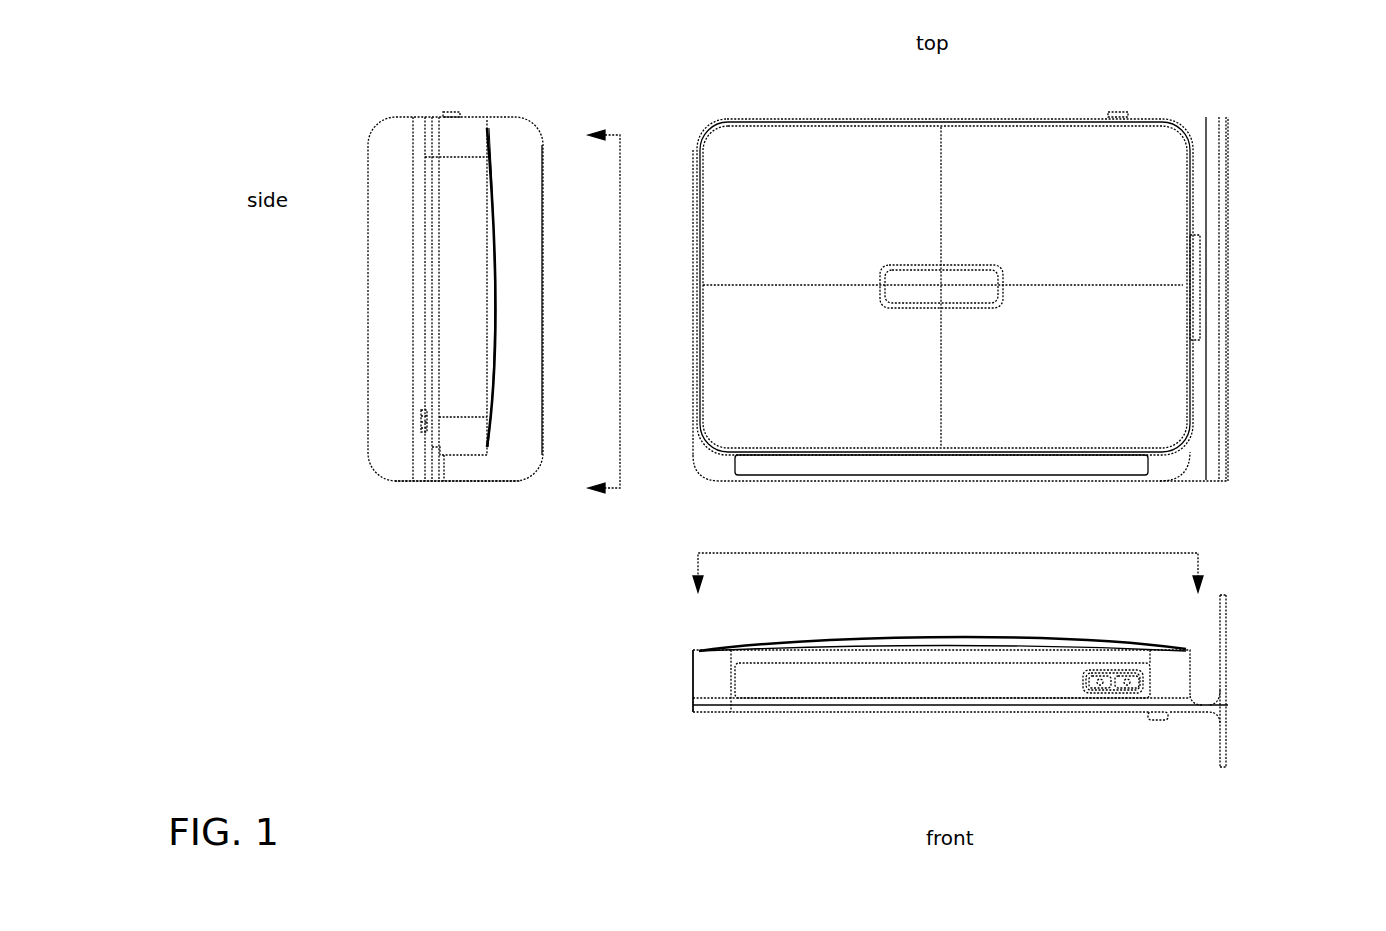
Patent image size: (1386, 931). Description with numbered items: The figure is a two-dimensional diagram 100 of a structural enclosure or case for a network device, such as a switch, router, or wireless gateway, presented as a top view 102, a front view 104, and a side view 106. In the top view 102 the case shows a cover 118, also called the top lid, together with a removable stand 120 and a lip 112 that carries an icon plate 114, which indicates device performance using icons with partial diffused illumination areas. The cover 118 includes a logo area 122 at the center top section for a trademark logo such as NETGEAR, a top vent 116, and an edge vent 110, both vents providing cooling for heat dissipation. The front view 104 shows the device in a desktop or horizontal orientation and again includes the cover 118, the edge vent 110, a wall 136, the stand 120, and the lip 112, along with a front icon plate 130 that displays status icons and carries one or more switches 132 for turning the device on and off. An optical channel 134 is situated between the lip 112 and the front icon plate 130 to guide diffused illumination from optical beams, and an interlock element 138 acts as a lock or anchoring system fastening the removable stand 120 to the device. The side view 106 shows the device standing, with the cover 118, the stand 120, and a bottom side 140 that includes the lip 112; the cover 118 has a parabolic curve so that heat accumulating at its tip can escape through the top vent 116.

The diagram 100 is at (1288, 136).
The top view 102 is at (893, 118).
The front view 104 is at (940, 619).
The side view 106 is at (290, 369).
The edge vent 110 is at (697, 342).
The lip 112 is at (437, 465).
The icon plate 114 is at (978, 464).
The top vent 116 is at (960, 310).
The cover 118 is at (497, 330).
The removable stand 120 is at (482, 462).
The logo area 122 is at (927, 268).
The front icon plate 130 is at (768, 686).
The switches 132 is at (1120, 694).
The optical channel 134 is at (693, 705).
The wall 136 is at (693, 660).
The interlock element 138 is at (1150, 720).
The bottom side 140 is at (440, 455).